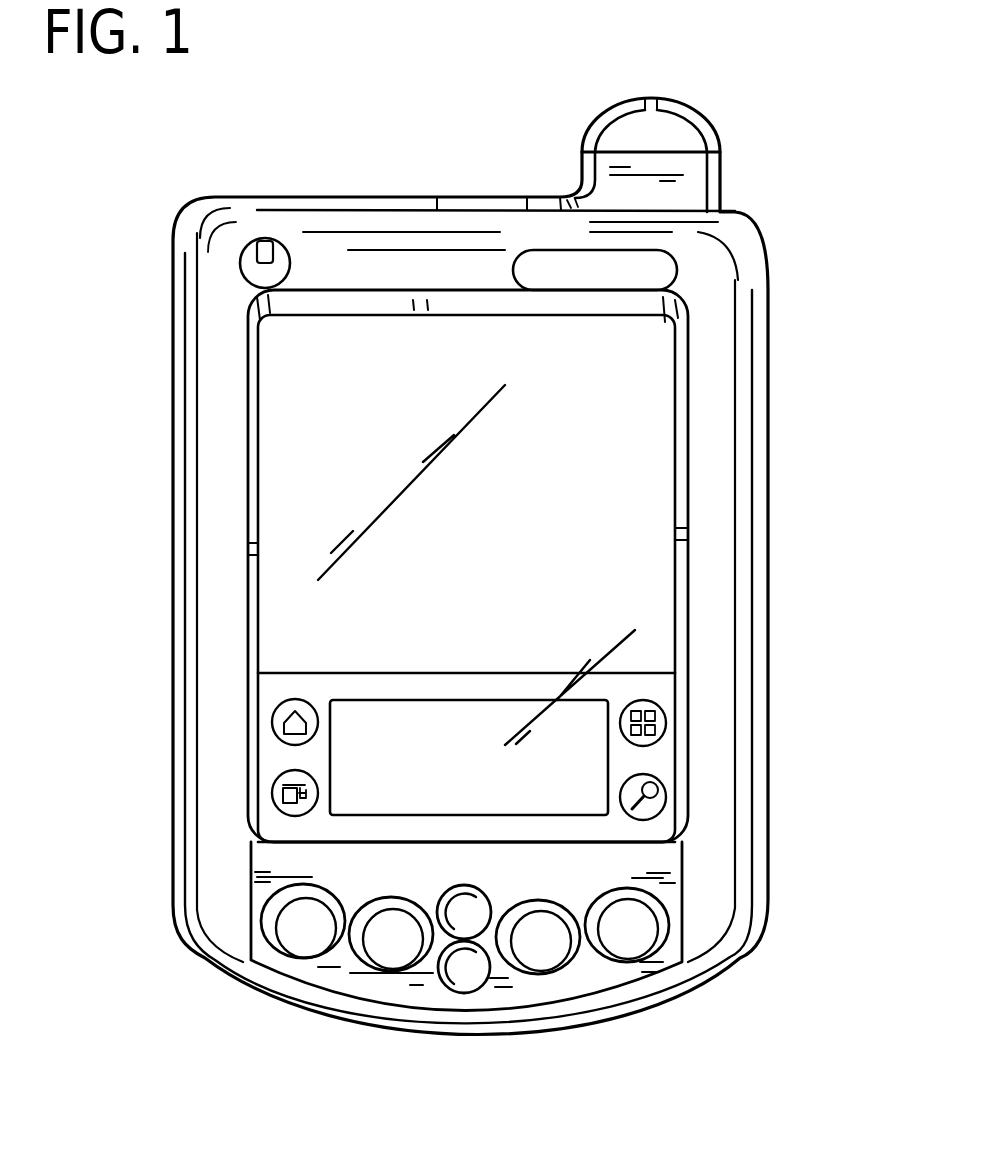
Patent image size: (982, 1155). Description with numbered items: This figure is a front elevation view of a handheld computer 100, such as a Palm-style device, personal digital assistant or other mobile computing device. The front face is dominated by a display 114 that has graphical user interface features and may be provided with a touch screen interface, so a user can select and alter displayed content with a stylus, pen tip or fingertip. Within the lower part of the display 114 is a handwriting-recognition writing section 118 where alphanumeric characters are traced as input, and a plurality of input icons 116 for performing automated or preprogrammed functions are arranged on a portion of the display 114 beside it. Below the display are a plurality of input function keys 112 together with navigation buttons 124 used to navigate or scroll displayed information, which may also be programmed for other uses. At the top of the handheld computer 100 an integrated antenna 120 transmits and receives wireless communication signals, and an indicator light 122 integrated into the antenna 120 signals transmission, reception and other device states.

The handheld computer 100 is at (400, 110).
The input function keys 112 is at (390, 945).
The display 114 is at (495, 522).
The input icons 116 is at (283, 782).
The writing section 118 is at (480, 772).
The integrated antenna 120 is at (670, 150).
The indicator light 122 is at (618, 106).
The navigation buttons 124 is at (468, 983).